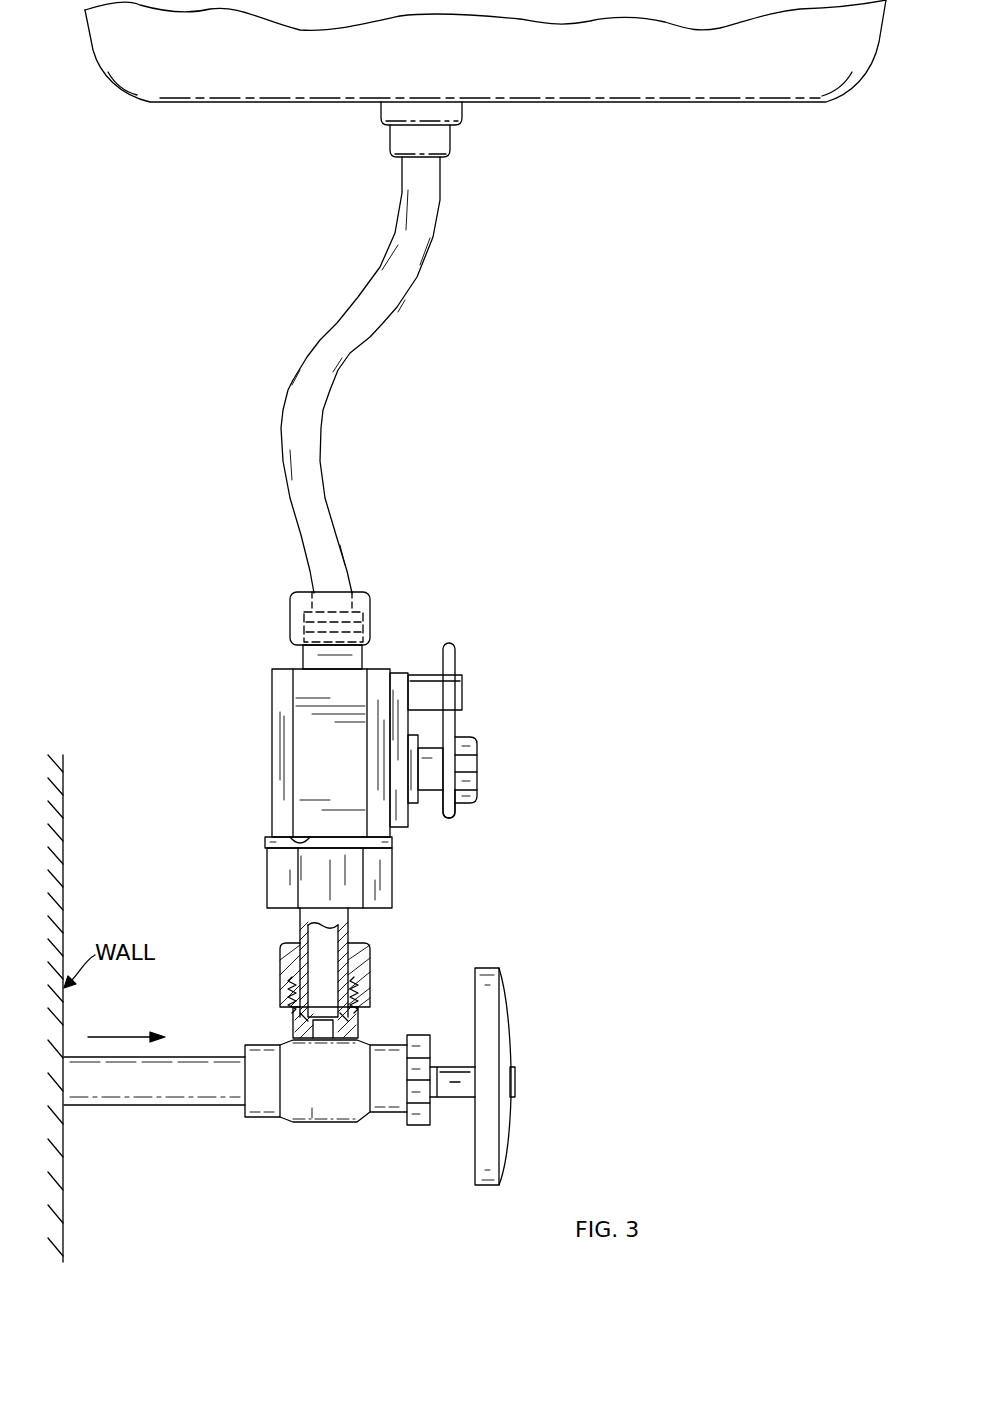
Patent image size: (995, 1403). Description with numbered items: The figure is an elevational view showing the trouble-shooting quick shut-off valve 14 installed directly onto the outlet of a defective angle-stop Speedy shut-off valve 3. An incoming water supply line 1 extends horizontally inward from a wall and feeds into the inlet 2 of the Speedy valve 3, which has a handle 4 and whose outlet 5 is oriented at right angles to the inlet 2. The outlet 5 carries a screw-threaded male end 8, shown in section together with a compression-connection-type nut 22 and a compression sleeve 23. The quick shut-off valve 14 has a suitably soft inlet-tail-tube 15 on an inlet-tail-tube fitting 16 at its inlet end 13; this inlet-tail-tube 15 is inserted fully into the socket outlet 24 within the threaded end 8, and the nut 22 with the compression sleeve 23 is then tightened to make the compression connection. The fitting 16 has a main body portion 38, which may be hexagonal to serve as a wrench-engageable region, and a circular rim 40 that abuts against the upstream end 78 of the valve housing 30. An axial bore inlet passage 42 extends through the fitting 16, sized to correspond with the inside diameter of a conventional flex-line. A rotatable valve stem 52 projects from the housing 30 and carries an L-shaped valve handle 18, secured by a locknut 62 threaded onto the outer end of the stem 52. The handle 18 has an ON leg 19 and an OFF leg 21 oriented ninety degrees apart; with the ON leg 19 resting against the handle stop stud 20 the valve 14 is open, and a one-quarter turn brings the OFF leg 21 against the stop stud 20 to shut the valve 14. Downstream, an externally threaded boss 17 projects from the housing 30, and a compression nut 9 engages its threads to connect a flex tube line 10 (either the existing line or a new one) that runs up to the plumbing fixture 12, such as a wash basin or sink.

The incoming water supply line 1 is at (147, 1097).
The inlet 2 is at (252, 1080).
The angle-stop Speedy shut-off valve 3 is at (313, 1110).
The handle 4 is at (508, 1035).
The outlet 5 is at (353, 1041).
The screw-threaded male end 8 is at (357, 985).
The compression nut 9 is at (300, 621).
The flex tube line 10 is at (313, 431).
The plumbing fixture 12 is at (654, 110).
The inlet end 13 is at (300, 912).
The quick shut-off valve 14 is at (281, 753).
The inlet-tail-tube 15 is at (305, 1010).
The inlet-tail-tube fitting 16 is at (270, 880).
The externally threaded boss 17 is at (365, 627).
The L-shaped valve handle 18 is at (466, 727).
The ON leg 19 is at (450, 657).
The handle stop stud 20 is at (464, 693).
The OFF leg 21 is at (453, 812).
The compression-connection-type nut 22 is at (290, 965).
The compression sleeve 23 is at (368, 956).
The socket outlet 24 is at (305, 1020).
The valve housing 30 is at (275, 703).
The main body portion 38 is at (300, 895).
The circular rim 40 is at (265, 845).
The axial bore inlet passage 42 is at (340, 948).
The rotatable valve stem 52 is at (433, 783).
The locknut 62 is at (478, 765).
The upstream end 78 is at (296, 841).